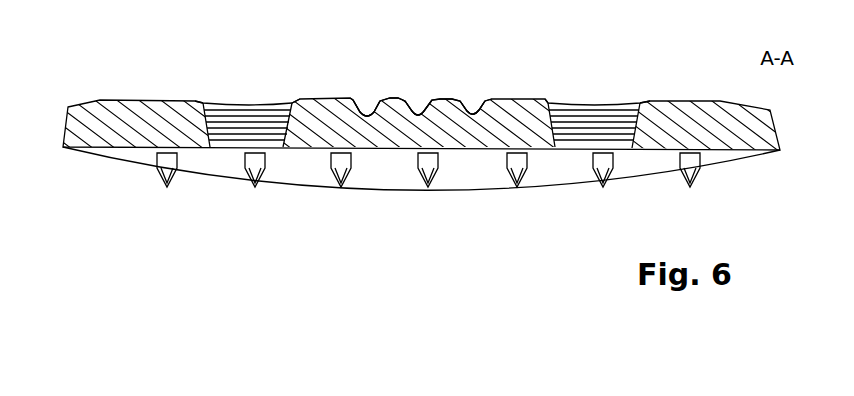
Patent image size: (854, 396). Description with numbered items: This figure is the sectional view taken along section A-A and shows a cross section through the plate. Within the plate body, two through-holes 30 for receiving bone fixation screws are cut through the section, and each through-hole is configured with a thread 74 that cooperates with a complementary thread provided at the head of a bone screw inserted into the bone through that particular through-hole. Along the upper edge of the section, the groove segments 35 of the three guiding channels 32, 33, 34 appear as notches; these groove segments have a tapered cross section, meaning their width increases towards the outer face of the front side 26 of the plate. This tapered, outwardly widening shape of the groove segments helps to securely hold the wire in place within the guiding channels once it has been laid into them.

The front side 26 is at (707, 102).
The through-holes 30 is at (238, 92).
The guiding channel 32 is at (367, 117).
The guiding channel 33 is at (418, 116).
The guiding channel 34 is at (473, 116).
The groove segments 35 is at (403, 75).
The thread 74 is at (262, 135).